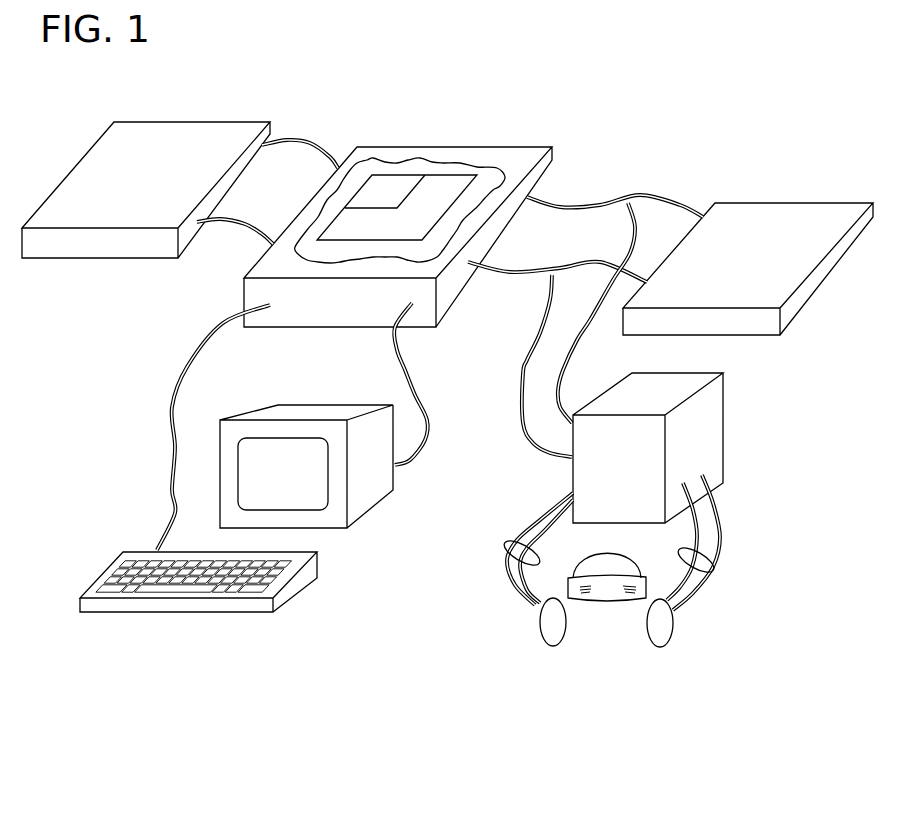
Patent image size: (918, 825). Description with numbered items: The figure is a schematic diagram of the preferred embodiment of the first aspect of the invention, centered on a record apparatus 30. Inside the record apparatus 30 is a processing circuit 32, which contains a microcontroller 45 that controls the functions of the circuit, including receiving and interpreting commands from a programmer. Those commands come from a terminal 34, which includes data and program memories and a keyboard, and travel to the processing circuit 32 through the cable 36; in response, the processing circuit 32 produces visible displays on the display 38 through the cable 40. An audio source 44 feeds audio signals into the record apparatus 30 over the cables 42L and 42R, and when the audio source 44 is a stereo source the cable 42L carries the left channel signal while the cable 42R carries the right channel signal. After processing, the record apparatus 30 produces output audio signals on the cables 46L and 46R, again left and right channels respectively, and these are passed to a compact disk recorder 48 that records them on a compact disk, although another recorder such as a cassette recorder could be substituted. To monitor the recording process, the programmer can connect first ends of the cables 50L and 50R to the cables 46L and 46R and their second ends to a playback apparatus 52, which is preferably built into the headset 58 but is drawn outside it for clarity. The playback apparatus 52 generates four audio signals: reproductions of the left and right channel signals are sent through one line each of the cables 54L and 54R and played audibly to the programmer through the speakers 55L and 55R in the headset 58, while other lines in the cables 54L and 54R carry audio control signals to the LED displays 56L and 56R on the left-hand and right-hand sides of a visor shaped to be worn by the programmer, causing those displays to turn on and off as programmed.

The record apparatus 30 is at (410, 147).
The processing circuit 32 is at (463, 168).
The terminal 34 is at (180, 615).
The cable 36 is at (170, 405).
The display 38 is at (362, 517).
The cable 40 is at (397, 358).
The cable 42R is at (302, 145).
The cable 42L is at (250, 236).
The audio source 44 is at (188, 122).
The microcontroller 45 is at (390, 177).
The cable 46R is at (580, 207).
The cable 46L is at (513, 273).
The compact disk recorder 48 is at (813, 203).
The cable 50R is at (563, 373).
The cable 50L is at (522, 410).
The playback apparatus 52 is at (727, 418).
The cable 54R is at (500, 547).
The cable 54L is at (713, 570).
The speaker 55R is at (547, 642).
The speaker 55L is at (667, 633).
The LED display 56R is at (587, 598).
The LED display 56L is at (632, 598).
The headset 58 is at (612, 598).